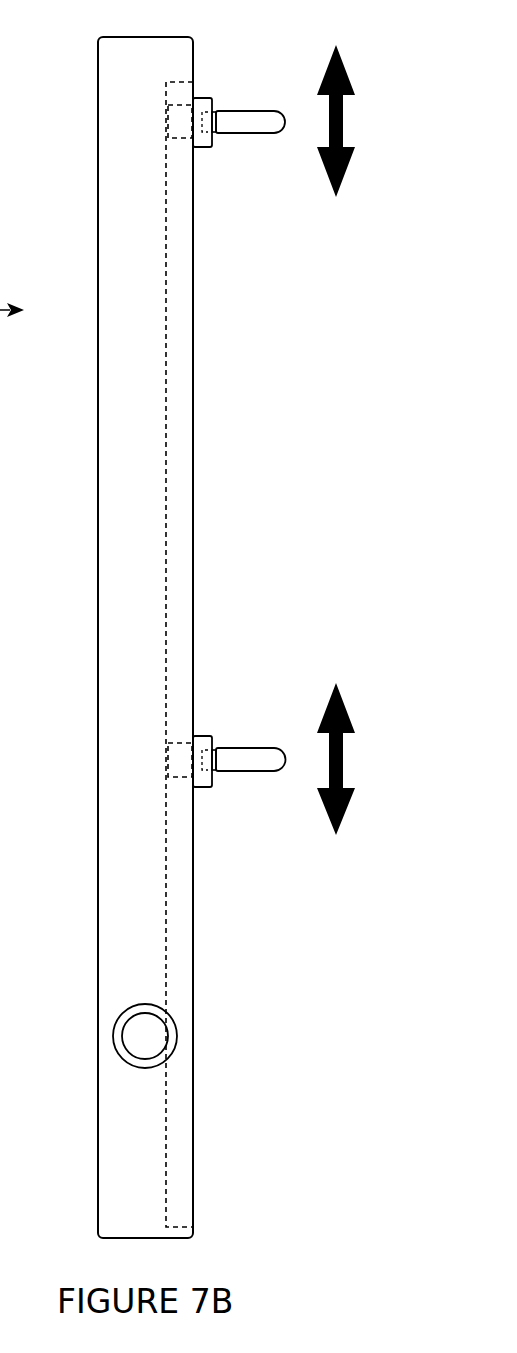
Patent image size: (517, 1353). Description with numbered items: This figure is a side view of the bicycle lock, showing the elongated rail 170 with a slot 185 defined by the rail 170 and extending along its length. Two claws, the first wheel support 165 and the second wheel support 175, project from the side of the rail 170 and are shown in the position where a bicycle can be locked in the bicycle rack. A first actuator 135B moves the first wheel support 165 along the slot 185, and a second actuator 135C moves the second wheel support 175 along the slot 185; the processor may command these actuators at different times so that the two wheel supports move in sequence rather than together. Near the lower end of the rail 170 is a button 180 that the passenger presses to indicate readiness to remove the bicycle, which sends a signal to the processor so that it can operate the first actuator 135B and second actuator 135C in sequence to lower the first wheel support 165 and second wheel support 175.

The first actuator 135B is at (182, 105).
The second actuator 135C is at (182, 743).
The first wheel support 165 is at (242, 133).
The rail 170 is at (98, 585).
The second wheel support 175 is at (242, 771).
The button 180 is at (113, 1037).
The slot 185 is at (166, 265).